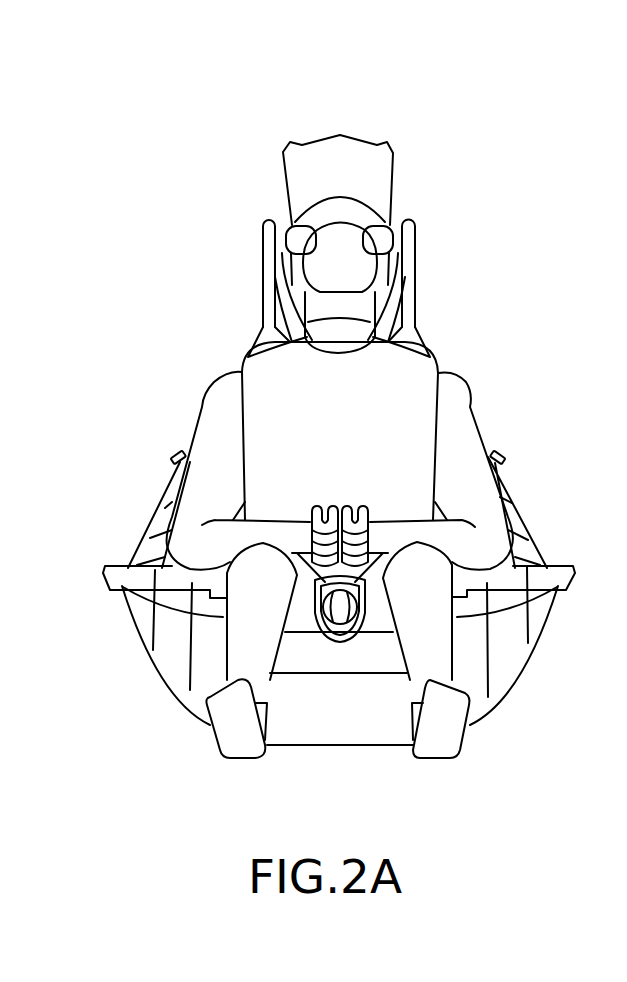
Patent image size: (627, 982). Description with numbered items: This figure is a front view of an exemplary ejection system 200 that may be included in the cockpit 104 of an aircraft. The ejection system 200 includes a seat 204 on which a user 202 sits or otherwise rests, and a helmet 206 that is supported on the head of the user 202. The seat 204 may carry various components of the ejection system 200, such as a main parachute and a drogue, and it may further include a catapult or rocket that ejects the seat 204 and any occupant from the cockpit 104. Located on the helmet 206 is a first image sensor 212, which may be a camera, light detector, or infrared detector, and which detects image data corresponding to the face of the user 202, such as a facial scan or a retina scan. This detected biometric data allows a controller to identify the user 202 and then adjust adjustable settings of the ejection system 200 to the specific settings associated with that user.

The cockpit 104 is at (317, 130).
The ejection system 200 is at (216, 304).
The user 202 is at (468, 387).
The seat 204 is at (292, 738).
The helmet 206 is at (360, 208).
The first image sensor 212 is at (384, 239).